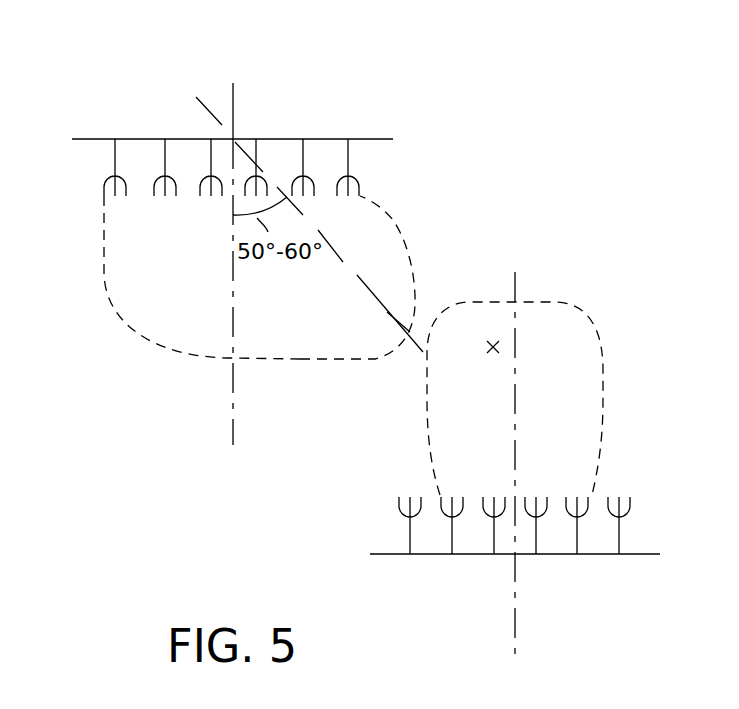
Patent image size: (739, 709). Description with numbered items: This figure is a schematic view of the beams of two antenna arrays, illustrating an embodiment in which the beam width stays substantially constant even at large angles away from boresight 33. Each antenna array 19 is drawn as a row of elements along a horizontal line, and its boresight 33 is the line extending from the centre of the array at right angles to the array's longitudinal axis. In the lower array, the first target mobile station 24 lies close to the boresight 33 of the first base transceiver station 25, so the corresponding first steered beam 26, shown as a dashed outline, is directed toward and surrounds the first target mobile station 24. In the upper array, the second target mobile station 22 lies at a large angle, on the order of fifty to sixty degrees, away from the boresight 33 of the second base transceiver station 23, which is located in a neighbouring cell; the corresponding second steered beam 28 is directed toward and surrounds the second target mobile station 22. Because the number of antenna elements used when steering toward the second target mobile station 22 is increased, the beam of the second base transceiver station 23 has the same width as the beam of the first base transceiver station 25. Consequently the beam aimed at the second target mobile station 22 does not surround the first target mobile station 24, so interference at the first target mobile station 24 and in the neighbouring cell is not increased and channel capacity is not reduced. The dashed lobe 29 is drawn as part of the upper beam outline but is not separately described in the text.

The antenna array 19 is at (639, 523).
The second target mobile station 22 is at (397, 318).
The second base transceiver station 23 is at (146, 125).
The first target mobile station 24 is at (488, 352).
The first base transceiver station 25 is at (624, 575).
The first steered beam 26 is at (603, 400).
The second steered beam 28 is at (393, 220).
The radiation pattern 29 is at (100, 169).
The boresight 33 is at (239, 90).